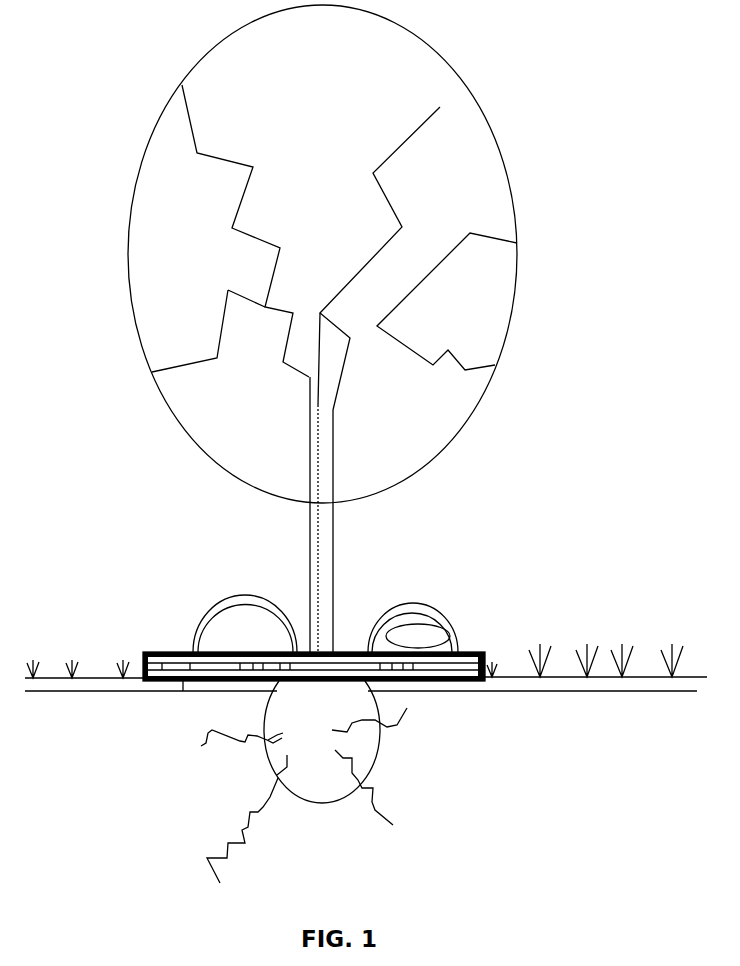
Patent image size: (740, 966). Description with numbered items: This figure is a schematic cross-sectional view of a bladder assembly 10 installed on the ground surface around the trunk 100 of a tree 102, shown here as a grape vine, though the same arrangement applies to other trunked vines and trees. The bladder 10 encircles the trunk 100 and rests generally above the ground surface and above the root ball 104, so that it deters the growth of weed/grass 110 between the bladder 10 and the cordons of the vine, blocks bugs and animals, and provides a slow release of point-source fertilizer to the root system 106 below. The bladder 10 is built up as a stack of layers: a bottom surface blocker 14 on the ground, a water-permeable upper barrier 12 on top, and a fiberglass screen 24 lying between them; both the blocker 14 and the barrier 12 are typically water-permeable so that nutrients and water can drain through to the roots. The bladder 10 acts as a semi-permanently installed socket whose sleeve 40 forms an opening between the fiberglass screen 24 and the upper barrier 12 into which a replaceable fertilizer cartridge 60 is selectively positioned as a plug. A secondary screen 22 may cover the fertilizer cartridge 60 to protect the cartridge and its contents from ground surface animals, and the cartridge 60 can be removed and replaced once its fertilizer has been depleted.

The bladder assembly 10 is at (485, 691).
The water-permeable upper barrier 12 is at (183, 650).
The bottom surface blocker 14 is at (183, 665).
The secondary screen 22 is at (423, 608).
The fiberglass screen 24 is at (225, 682).
The sleeve 40 is at (250, 627).
The fertilizer cartridge 60 is at (435, 637).
The trunk 100 is at (332, 557).
The tree 102 is at (432, 300).
The root ball 104 is at (350, 742).
The root system 106 is at (265, 812).
The weed/grass 110 is at (72, 674).